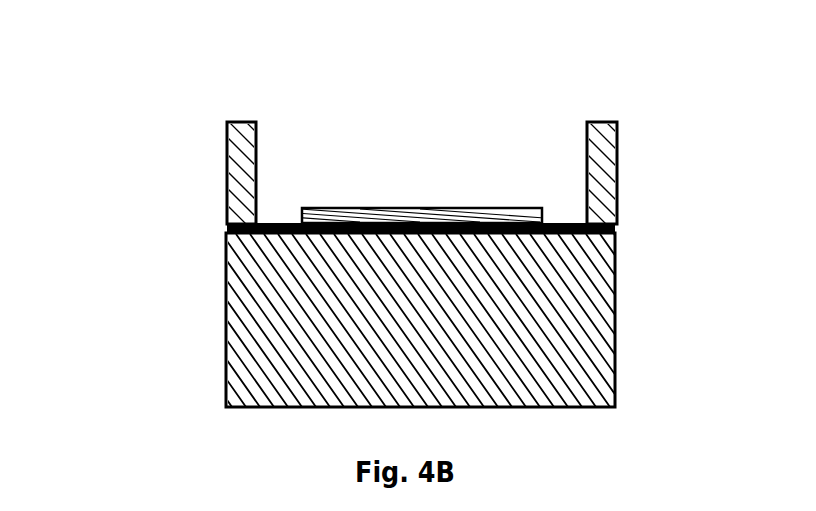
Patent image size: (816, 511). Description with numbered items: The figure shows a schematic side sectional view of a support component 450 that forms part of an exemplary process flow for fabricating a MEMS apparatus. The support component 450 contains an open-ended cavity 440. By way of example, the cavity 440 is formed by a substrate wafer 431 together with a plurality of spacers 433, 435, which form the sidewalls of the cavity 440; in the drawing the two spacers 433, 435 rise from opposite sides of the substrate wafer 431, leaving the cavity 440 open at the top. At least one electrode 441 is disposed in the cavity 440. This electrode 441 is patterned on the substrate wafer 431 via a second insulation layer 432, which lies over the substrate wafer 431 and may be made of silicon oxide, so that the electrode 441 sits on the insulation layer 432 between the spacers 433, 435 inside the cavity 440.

The support component 450 is at (152, 83).
The substrate wafer 431 is at (227, 273).
The second insulation layer 432 is at (615, 224).
The spacer 433 is at (227, 177).
The spacer 435 is at (615, 192).
The open-ended cavity 440 is at (504, 156).
The electrode 441 is at (402, 207).